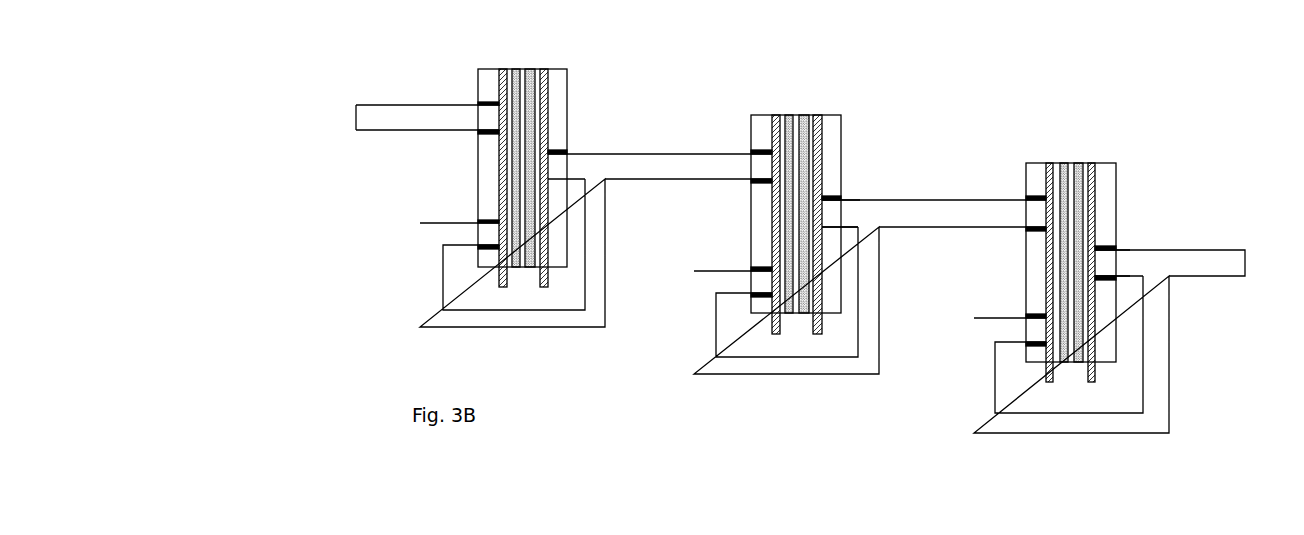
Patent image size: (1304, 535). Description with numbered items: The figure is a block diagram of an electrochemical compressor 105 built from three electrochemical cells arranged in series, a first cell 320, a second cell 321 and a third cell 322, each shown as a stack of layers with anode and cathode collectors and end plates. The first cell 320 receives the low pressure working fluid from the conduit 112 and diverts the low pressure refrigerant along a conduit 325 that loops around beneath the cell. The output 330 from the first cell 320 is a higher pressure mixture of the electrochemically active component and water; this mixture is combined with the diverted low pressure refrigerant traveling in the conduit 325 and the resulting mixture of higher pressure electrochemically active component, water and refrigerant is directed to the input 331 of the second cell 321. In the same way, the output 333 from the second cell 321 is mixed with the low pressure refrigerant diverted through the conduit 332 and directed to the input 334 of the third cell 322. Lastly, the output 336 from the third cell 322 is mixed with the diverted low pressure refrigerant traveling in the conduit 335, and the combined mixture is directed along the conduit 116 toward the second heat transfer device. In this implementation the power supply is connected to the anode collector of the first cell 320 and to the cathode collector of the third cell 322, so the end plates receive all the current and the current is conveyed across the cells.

The electrochemical compressor 105 is at (1128, 50).
The conduit 112 is at (428, 105).
The conduit 116 is at (1222, 250).
The first cell 320 is at (513, 52).
The second cell 321 is at (790, 96).
The third cell 322 is at (1066, 144).
The conduit 325 is at (448, 223).
The output 330 is at (575, 153).
The input 331 is at (682, 152).
The conduit 332 is at (694, 332).
The output 333 is at (844, 198).
The input 334 is at (940, 198).
The conduit 335 is at (974, 355).
The output 336 is at (1123, 250).